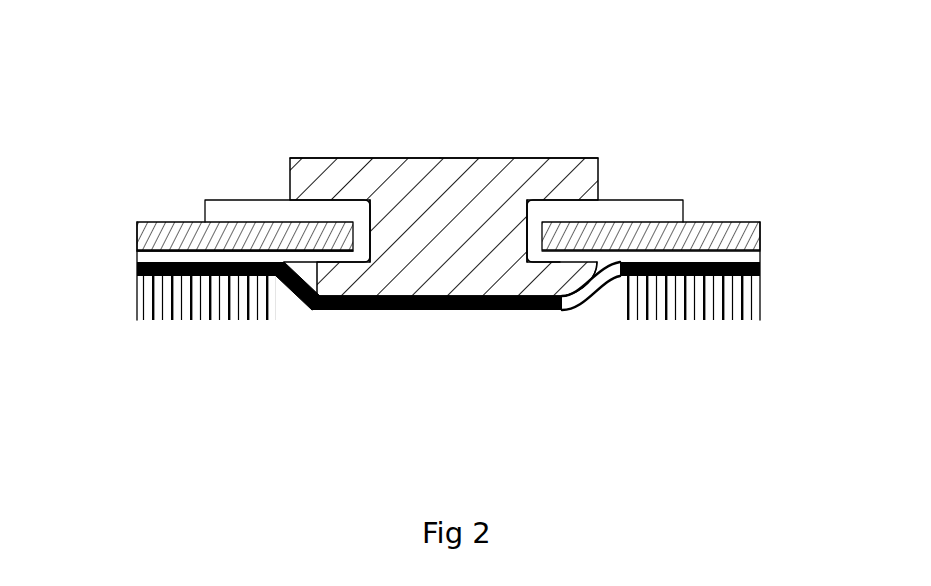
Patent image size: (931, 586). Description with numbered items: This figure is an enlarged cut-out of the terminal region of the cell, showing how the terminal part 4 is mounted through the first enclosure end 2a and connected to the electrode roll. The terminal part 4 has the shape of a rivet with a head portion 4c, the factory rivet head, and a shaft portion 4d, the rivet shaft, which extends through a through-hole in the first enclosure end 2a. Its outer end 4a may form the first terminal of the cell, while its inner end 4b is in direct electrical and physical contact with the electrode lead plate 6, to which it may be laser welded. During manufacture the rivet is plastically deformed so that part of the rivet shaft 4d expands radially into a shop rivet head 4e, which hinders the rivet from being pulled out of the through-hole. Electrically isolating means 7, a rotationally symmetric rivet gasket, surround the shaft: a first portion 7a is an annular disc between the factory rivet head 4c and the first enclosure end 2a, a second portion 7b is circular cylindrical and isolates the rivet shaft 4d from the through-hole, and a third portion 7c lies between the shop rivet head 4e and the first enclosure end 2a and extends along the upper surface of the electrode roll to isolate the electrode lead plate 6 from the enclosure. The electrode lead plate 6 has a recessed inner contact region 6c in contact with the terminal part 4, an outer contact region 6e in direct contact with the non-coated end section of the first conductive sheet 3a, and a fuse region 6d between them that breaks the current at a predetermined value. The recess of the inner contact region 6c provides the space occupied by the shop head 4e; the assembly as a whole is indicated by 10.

The first enclosure end 2a is at (760, 221).
The first conductive sheet 3a is at (153, 305).
The terminal part 4 is at (444, 214).
The outer end 4a is at (470, 160).
The inner end 4b is at (457, 297).
The head portion 4c is at (398, 178).
The shaft portion 4d is at (481, 303).
The shop rivet head 4e is at (543, 302).
The electrode lead plate 6 is at (448, 345).
The inner contact region 6c is at (408, 312).
The fuse region 6d is at (298, 307).
The outer contact region 6e is at (137, 265).
The electrically isolating means 7 is at (398, 154).
The first portion 7a is at (242, 212).
The second portion 7b is at (530, 212).
The third portion 7c is at (192, 258).
The electronic component module 10 is at (454, 219).